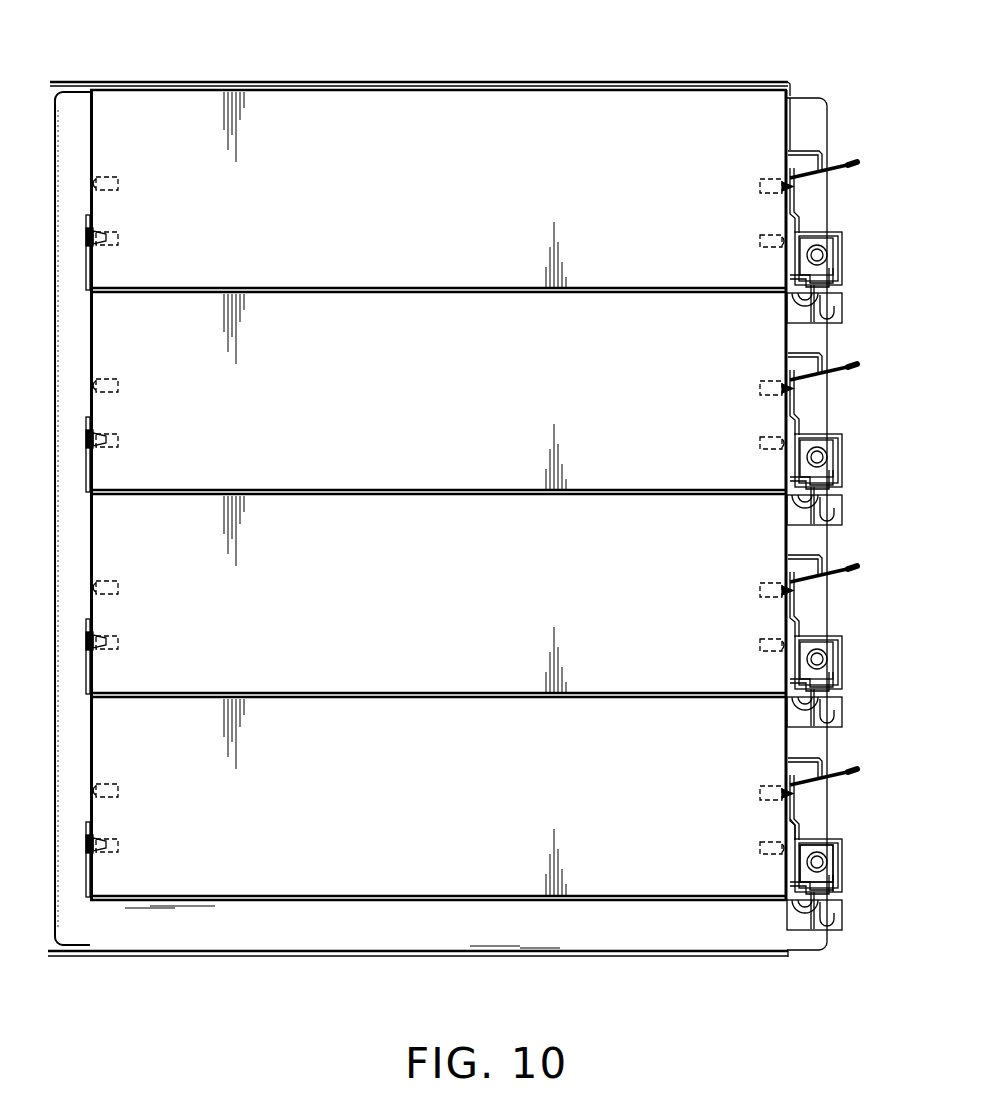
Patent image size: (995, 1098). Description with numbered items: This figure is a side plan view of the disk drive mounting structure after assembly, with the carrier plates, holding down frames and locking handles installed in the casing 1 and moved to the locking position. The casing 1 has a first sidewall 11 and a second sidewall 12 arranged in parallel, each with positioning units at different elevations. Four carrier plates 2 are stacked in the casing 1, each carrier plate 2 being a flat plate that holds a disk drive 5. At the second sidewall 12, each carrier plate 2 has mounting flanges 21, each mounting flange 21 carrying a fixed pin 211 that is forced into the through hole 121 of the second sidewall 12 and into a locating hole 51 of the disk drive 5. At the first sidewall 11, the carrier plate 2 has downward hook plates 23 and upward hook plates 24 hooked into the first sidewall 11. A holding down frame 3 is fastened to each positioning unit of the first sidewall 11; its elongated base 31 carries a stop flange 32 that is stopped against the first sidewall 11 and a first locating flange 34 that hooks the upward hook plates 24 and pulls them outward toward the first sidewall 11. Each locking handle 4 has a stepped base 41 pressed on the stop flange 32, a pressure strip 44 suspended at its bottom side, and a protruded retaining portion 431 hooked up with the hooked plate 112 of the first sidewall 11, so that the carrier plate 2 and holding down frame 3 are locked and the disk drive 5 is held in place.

The casing 1 is at (316, 80).
The carrier plate 2 is at (432, 692).
The holding down frame 3 is at (797, 254).
The locking handle 4 is at (803, 214).
The disk drive 5 is at (464, 108).
The first sidewall 11 is at (788, 110).
The second sidewall 12 is at (93, 354).
The through hole 121 is at (95, 453).
The mounting flange 21 is at (87, 887).
The fixed pin 211 is at (88, 847).
The downward hook plate 23 is at (802, 930).
The upward hook plate 24 is at (830, 888).
The elongated base 31 is at (798, 860).
The stop flange 32 is at (789, 838).
The first locating flange 34 is at (790, 905).
The stepped base 41 is at (808, 842).
The pressure strip 44 is at (817, 938).
The locating hole 51 is at (100, 792).
The hooked plate 112 is at (797, 762).
The protruded retaining portion 431 is at (781, 795).